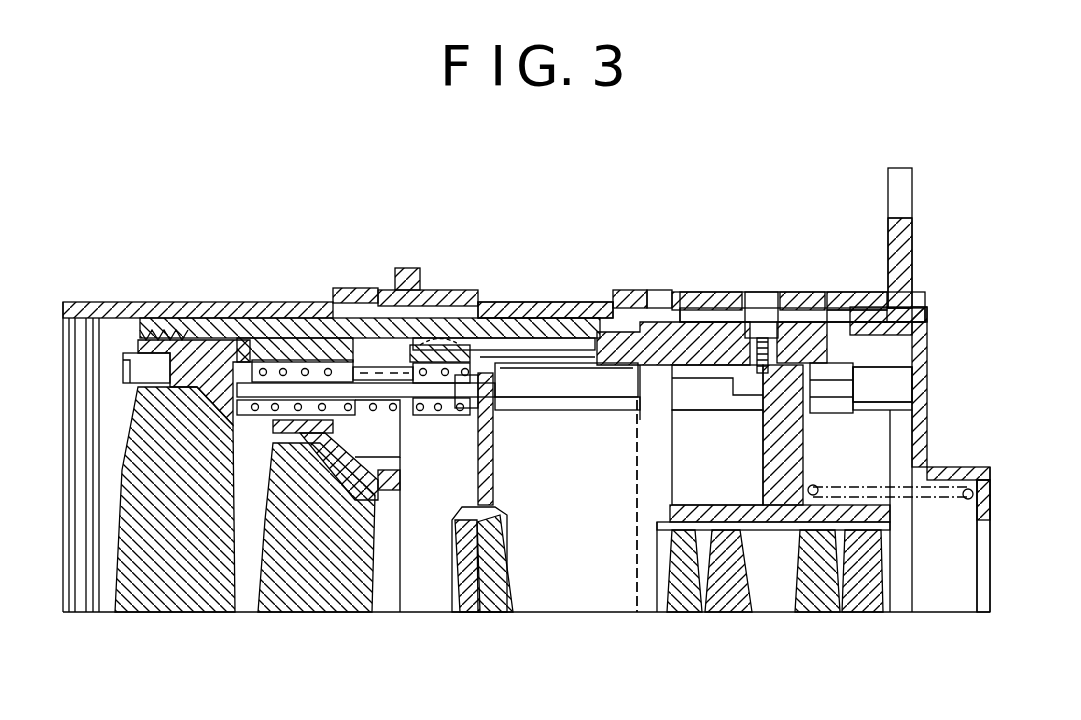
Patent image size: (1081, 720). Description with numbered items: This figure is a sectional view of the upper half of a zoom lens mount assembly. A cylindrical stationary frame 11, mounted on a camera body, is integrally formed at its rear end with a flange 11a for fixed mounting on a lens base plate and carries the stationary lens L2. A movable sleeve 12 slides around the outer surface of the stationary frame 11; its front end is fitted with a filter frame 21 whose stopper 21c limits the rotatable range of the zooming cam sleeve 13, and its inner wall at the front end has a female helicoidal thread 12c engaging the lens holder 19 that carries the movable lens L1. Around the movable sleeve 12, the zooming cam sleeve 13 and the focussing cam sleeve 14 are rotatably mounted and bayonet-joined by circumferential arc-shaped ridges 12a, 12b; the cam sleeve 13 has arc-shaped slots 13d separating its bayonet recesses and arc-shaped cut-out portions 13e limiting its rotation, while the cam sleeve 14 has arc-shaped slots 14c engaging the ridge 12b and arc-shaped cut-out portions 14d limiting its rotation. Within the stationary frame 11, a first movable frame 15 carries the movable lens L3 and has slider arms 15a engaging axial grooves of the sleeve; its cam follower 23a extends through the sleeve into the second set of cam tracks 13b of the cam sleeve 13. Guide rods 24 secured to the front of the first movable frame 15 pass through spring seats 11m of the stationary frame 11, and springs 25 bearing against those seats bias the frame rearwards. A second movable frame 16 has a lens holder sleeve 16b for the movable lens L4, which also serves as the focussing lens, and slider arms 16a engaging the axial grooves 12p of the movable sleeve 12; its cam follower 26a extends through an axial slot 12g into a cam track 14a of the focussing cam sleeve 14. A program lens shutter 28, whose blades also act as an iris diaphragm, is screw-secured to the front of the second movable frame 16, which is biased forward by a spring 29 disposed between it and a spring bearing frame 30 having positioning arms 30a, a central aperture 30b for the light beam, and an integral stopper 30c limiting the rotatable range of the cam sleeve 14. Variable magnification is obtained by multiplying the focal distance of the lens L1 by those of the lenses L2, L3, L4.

The filter frame 21 is at (95, 300).
The female helicoidal thread 12c is at (150, 300).
The lens holder 19 is at (197, 305).
The spring seat 11m is at (232, 300).
The stationary frame 11 is at (275, 305).
The stopper 21c is at (340, 290).
The arc-shaped cut-out portion 13e is at (368, 290).
The cam follower 23a is at (437, 290).
The second set of cam tracks 13b is at (505, 305).
The movable sleeve 12 is at (540, 305).
The zooming cam sleeve 13 is at (573, 305).
The arc-shaped ridge 12a is at (605, 305).
The arc-shaped slot 13d is at (645, 300).
The arc-shaped slot 14c is at (690, 300).
The arc-shaped ridge 12b is at (700, 300).
The cam follower 26a is at (758, 300).
The cam track 14a is at (795, 300).
The focussing cam sleeve 14 is at (810, 300).
The axial slot 12g is at (825, 300).
The arc-shaped cut-out portion 14d is at (865, 300).
The flange 11a is at (900, 226).
The stopper 30c is at (905, 300).
The axial groove 12p is at (920, 335).
The positioning arm 30a is at (897, 383).
The spring bearing frame 30 is at (920, 418).
The aperture 30b is at (985, 552).
The spring 29 is at (870, 480).
The slider arm 16a is at (692, 368).
The second movable frame 16 is at (765, 478).
The lens holder sleeve 16b is at (637, 495).
The program lens shutter 28 is at (636, 580).
The slider arm 15a is at (578, 385).
The first movable frame 15 is at (493, 470).
The guide rod 24 is at (405, 398).
The spring 25 is at (373, 411).
The movable lens L1 is at (178, 585).
The stationary lens L2 is at (307, 590).
The movable lens L3 is at (493, 590).
The movable lens L4 is at (825, 590).